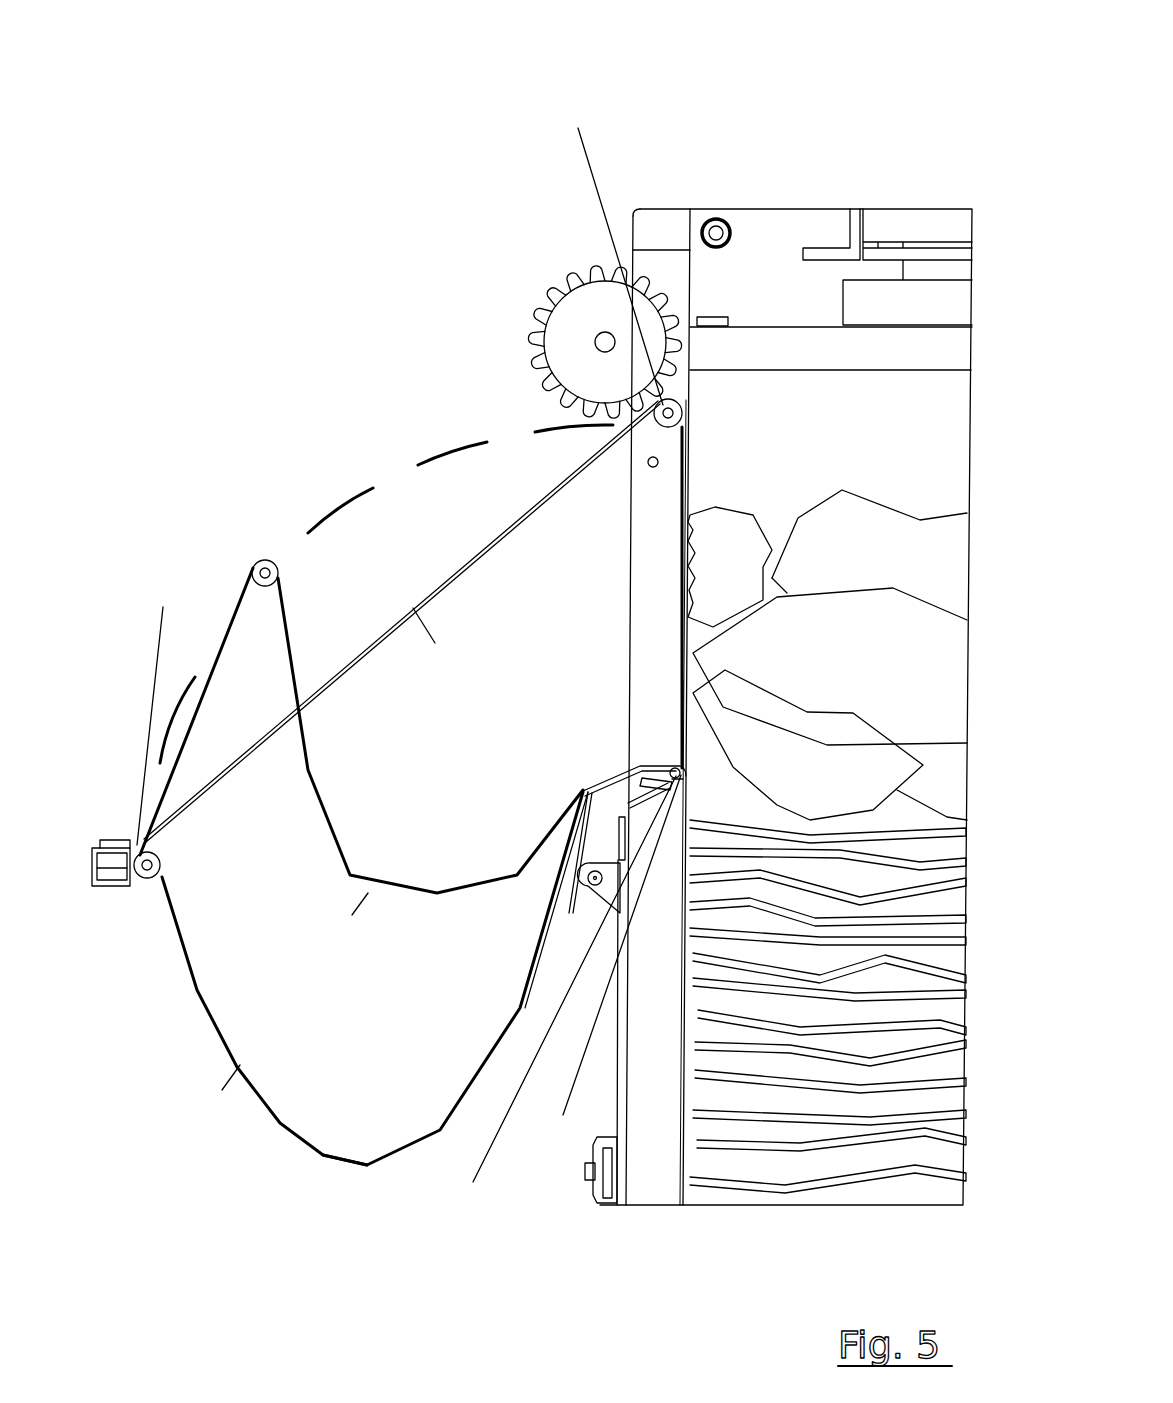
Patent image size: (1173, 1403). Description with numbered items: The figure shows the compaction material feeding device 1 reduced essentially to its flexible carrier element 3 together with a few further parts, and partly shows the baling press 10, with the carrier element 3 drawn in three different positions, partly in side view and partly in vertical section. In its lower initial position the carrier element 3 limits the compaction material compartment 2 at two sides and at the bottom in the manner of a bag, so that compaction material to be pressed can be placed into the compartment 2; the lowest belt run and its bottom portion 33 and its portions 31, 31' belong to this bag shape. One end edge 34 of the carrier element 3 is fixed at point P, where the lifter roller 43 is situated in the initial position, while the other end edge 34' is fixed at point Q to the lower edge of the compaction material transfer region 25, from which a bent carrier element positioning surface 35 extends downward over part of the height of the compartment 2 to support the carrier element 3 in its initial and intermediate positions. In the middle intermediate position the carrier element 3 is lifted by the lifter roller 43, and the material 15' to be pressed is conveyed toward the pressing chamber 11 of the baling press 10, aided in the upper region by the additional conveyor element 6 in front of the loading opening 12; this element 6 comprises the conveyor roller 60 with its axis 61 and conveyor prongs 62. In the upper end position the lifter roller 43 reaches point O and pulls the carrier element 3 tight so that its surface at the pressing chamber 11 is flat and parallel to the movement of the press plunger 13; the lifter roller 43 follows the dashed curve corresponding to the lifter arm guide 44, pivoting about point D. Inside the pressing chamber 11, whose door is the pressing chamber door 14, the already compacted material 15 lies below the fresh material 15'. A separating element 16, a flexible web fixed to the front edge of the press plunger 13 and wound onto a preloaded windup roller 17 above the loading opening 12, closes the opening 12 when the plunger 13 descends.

The compaction material feeding device 1 is at (247, 392).
The compaction material compartment 2 is at (399, 771).
The carrier element 3 is at (664, 626).
The additional conveyor element 6 is at (518, 312).
The baling press 10 is at (800, 160).
The pressing chamber 11 is at (884, 447).
The loading opening 12 is at (700, 486).
The press plunger 13 is at (893, 360).
The pressing chamber door 14 is at (637, 1121).
The compaction material 15 is at (828, 1045).
The additional pressing material 15' is at (827, 645).
The separating element 16 is at (700, 272).
The windup roller 17 is at (718, 218).
The compaction material transfer region 25 is at (656, 691).
The first belt portion 31 is at (340, 978).
The belt portion 31' is at (508, 905).
The belt bottom 33 is at (378, 1168).
The end edge 34 is at (105, 816).
The other end edge 34' is at (725, 779).
The carrier element positioning surface 35 is at (575, 878).
The lifter roller 43 is at (265, 590).
The lifter arm guide 44 is at (446, 456).
The conveyor roller 60 is at (568, 358).
The axis 61 is at (607, 338).
The conveyor prongs 62 is at (555, 288).